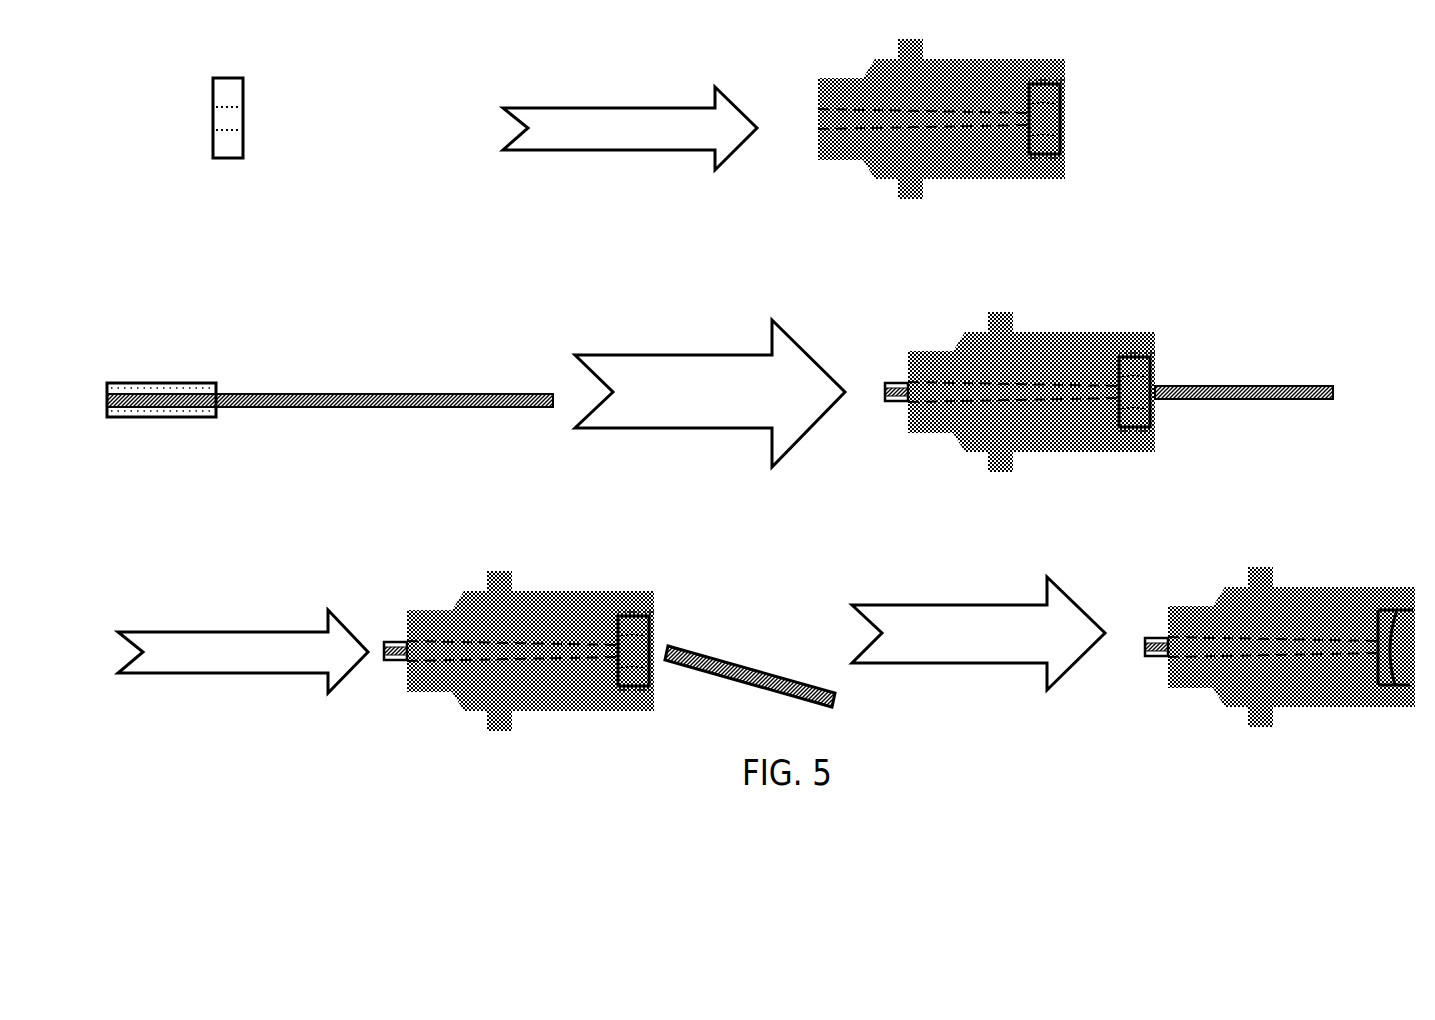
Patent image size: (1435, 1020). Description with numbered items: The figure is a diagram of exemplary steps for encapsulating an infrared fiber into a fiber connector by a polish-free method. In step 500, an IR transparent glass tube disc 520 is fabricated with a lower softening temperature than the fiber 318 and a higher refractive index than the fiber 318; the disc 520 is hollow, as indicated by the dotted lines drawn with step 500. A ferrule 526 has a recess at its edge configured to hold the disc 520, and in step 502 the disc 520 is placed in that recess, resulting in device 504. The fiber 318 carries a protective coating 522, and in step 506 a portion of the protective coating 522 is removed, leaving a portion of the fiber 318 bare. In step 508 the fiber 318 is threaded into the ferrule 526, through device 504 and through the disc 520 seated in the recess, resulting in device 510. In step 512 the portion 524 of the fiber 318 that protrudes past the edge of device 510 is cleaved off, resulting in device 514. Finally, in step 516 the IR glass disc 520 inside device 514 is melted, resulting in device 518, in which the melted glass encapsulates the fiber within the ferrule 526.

The fiber 318 is at (318, 387).
The step of fabricating disc 500 is at (307, 139).
The step of placing disc 502 is at (570, 92).
The device 504 is at (954, 152).
The step of removing protective coating 506 is at (330, 419).
The step of threading fiber 508 is at (623, 436).
The device 510 is at (1122, 414).
The step of cleaving fiber 512 is at (188, 683).
The device 514 is at (652, 727).
The step of melting disc 516 is at (905, 672).
The device 518 is at (1410, 745).
The IR transparent glass tube disc 520 is at (203, 85).
The protective coating 522 is at (115, 380).
The portion of fiber 524 is at (712, 672).
The ferrule 526 is at (934, 124).